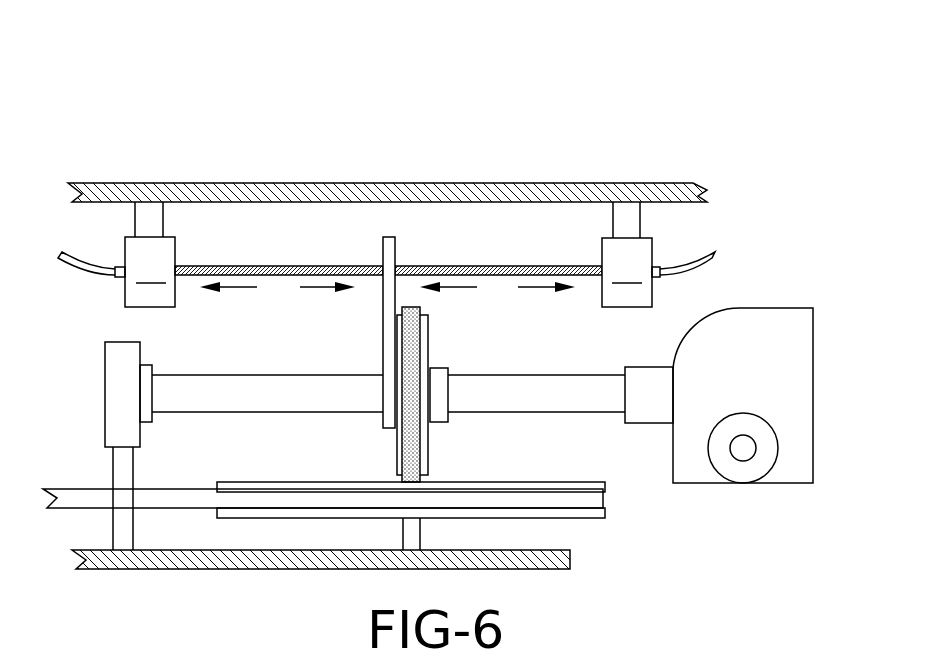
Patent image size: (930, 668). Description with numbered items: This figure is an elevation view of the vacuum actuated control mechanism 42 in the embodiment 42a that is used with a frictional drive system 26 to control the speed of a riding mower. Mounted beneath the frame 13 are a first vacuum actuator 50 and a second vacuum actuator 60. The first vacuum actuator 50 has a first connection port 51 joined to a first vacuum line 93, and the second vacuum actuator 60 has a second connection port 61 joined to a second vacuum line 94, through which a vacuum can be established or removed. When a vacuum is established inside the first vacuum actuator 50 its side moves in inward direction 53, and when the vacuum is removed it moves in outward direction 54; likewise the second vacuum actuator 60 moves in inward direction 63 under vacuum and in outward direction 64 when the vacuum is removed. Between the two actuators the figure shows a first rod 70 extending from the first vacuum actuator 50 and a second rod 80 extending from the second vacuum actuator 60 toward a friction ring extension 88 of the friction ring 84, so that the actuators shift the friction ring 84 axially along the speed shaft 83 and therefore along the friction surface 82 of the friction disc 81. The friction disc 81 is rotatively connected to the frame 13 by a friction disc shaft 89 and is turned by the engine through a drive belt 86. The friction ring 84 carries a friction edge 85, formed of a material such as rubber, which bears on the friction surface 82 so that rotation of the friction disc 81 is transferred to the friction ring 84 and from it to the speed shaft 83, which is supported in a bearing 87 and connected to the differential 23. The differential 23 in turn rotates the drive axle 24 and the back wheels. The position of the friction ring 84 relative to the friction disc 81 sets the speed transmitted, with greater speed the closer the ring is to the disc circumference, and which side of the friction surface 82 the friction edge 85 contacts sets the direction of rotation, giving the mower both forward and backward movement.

The frame 13 is at (523, 183).
The vacuum actuated control mechanism 42 is at (249, 130).
The vacuum actuated control mechanism 42a is at (714, 92).
The frictional drive system 26 is at (745, 198).
The first vacuum actuator 50 is at (150, 254).
The first connection port 51 is at (118, 282).
The first vacuum line 93 is at (62, 270).
The first piston rod 70 is at (265, 265).
The second piston rod 80 is at (517, 265).
The friction ring extension 88 is at (383, 245).
The inward direction 53 is at (240, 292).
The outward direction 54 is at (313, 292).
The outward direction 64 is at (463, 292).
The inward direction 63 is at (531, 292).
The second vacuum actuator 60 is at (627, 254).
The second connection port 61 is at (655, 282).
The second vacuum line 94 is at (712, 262).
The bearing 87 is at (118, 386).
The speed shaft 83 is at (238, 383).
The friction ring 84 is at (400, 455).
The friction edge 85 is at (420, 483).
The differential 23 is at (802, 377).
The drive axle 24 is at (743, 455).
The drive belt 86 is at (95, 493).
The friction disc 81 is at (300, 485).
The friction surface 82 is at (538, 472).
The friction disc shaft 89 is at (420, 535).